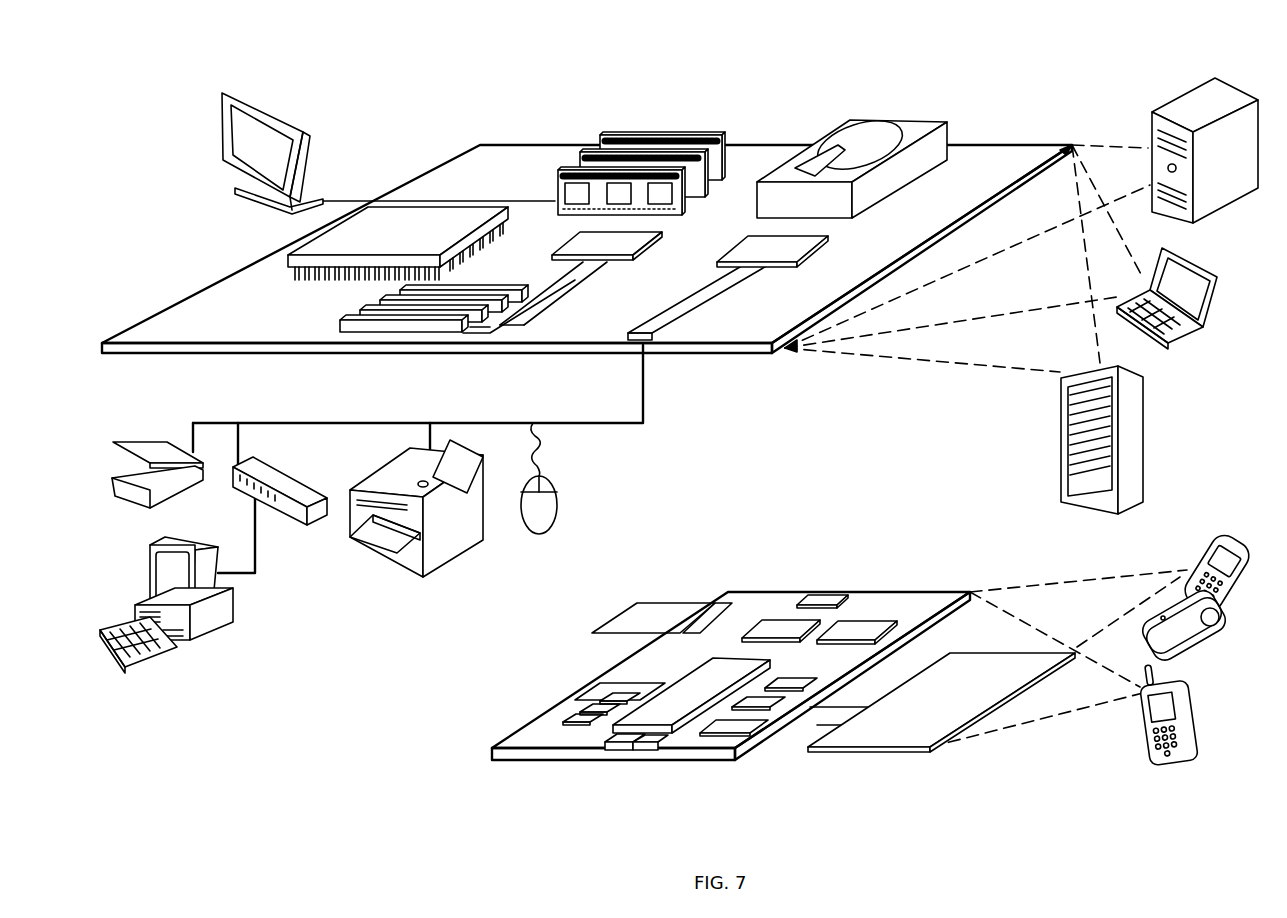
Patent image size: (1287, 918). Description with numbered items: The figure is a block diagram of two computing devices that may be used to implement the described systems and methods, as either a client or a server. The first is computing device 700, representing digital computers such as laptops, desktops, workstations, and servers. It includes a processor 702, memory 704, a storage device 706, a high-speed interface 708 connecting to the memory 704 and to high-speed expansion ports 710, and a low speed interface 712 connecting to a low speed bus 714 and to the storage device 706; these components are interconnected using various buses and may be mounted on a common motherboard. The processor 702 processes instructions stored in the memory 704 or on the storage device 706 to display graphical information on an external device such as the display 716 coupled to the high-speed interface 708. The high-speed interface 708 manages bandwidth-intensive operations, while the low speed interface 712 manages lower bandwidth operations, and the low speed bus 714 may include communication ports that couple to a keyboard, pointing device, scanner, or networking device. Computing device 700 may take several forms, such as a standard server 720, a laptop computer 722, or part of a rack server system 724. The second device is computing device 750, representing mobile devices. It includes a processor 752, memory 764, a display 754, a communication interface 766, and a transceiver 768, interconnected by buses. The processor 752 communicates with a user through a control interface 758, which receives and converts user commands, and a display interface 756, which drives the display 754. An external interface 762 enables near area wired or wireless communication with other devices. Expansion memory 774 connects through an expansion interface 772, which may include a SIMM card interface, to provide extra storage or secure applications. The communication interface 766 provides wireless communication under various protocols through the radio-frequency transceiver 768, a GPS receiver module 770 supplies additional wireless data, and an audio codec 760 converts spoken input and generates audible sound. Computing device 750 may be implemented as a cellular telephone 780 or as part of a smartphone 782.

The computing device 700 is at (413, 118).
The processor 702 is at (289, 258).
The memory 704 is at (617, 138).
The storage device 706 is at (850, 122).
The high-speed interface 708 is at (583, 243).
The high-speed expansion ports 710 is at (367, 315).
The low speed interface 712 is at (757, 243).
The low speed bus 714 is at (660, 347).
The display 716 is at (222, 93).
The standard server 720 is at (1150, 128).
The laptop computer 722 is at (1212, 272).
The rack server system 724 is at (1061, 466).
The computing device 750 is at (469, 762).
The processor 752 is at (665, 718).
The display 754 is at (897, 735).
The display interface 756 is at (732, 730).
The control interface 758 is at (767, 707).
The audio codec 760 is at (792, 685).
The external interface 762 is at (630, 745).
The memory 764 is at (587, 708).
The communication interface 766 is at (783, 628).
The transceiver 768 is at (858, 628).
The GPS receiver module 770 is at (833, 594).
The expansion interface 772 is at (710, 603).
The expansion memory 774 is at (641, 605).
The cellular telephone 780 is at (1197, 560).
The smartphone 782 is at (1143, 722).